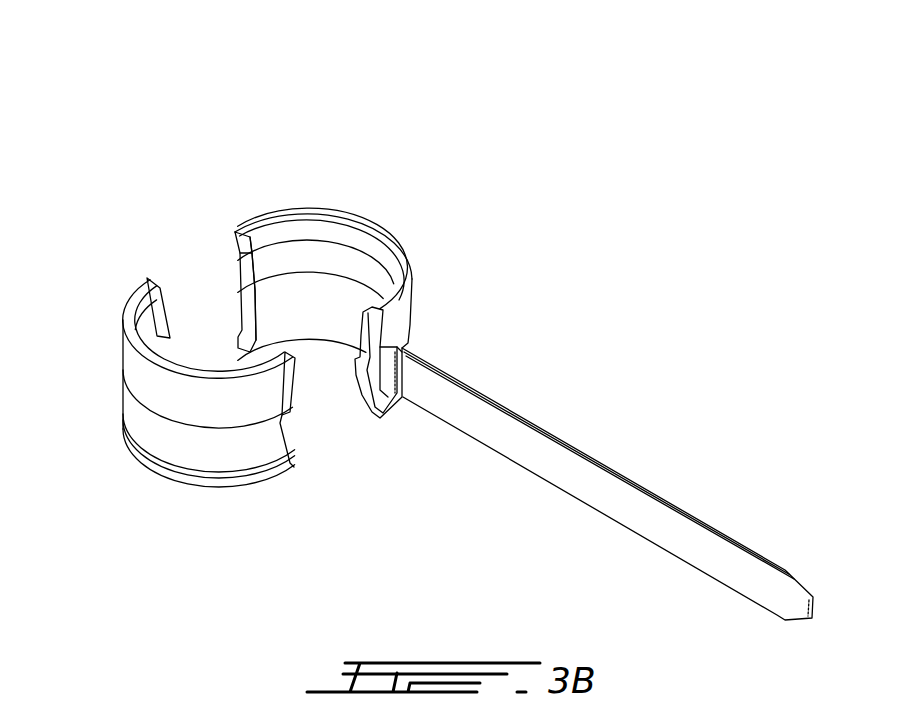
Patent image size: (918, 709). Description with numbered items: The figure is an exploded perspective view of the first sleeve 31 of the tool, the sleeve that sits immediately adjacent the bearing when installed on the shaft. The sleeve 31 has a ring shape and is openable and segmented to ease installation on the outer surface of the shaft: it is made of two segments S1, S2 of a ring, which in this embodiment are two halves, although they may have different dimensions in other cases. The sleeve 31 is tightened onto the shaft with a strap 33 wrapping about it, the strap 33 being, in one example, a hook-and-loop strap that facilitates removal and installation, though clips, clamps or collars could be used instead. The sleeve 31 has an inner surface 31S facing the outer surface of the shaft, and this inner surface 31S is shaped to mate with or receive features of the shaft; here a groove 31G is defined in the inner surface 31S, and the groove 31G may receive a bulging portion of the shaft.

The first sleeve 31 is at (503, 195).
The inner surface 31S is at (357, 259).
The groove 31G is at (251, 265).
The strap 33 is at (477, 413).
The first segment S1 is at (312, 211).
The second segment S2 is at (135, 366).